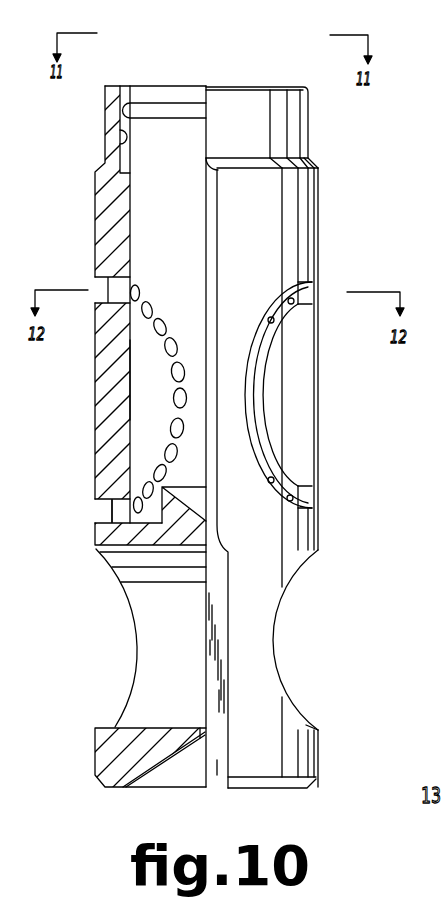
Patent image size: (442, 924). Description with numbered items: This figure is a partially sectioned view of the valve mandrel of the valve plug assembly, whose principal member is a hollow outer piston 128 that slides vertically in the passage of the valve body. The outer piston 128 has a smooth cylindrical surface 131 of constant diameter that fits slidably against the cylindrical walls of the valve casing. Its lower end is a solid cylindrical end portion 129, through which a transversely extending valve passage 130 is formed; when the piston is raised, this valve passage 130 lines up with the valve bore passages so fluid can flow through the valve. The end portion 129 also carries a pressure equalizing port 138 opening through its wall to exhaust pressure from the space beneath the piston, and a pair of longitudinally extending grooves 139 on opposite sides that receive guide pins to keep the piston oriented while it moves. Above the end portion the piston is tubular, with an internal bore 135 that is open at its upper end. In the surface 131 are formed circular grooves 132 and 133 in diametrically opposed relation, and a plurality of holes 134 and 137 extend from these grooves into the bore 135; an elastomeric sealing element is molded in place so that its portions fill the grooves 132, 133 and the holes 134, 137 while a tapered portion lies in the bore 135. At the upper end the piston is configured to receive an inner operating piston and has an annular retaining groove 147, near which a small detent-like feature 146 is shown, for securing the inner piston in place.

The hollow outer piston 128 is at (352, 190).
The solid cylindrical end portion 129 is at (319, 755).
The valve passage 130 is at (117, 728).
The smooth cylindrical surface 131 is at (95, 455).
The circular groove 132 is at (310, 502).
The circular groove 133 is at (111, 503).
The holes 134 is at (277, 497).
The internal bore 135 is at (132, 386).
The holes 137 is at (118, 290).
The pressure equalizing port 138 is at (202, 735).
The longitudinally extending grooves 139 is at (219, 758).
The detent 146 is at (123, 136).
The annular retaining groove 147 is at (136, 108).